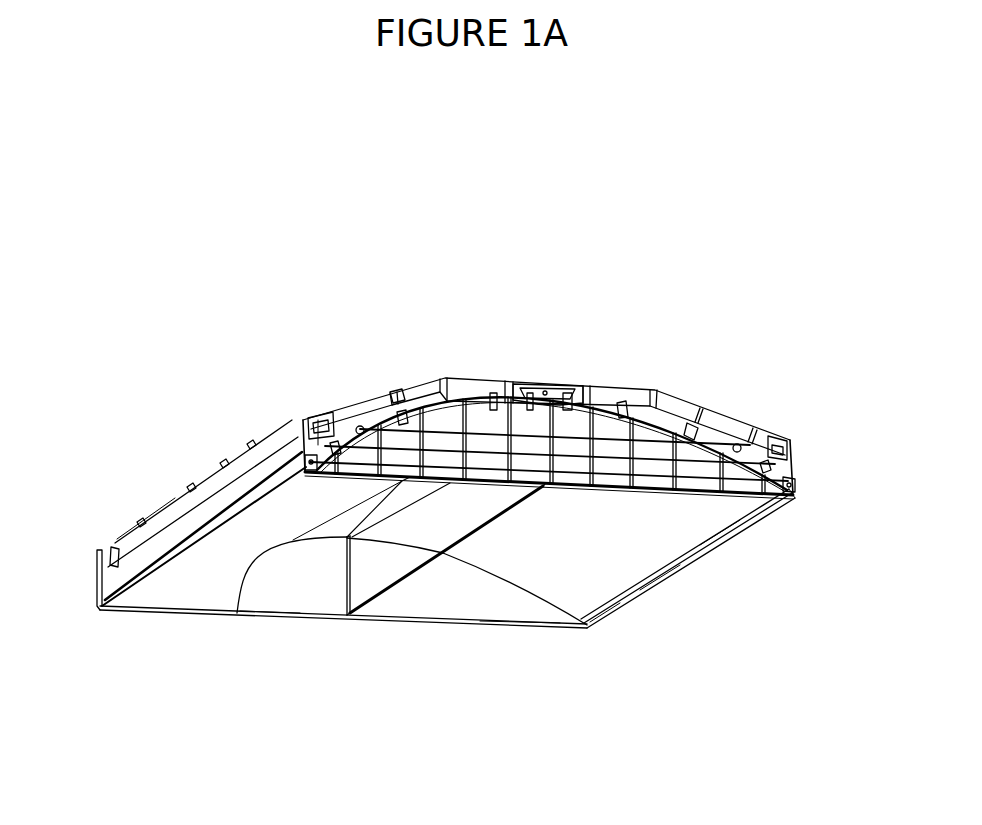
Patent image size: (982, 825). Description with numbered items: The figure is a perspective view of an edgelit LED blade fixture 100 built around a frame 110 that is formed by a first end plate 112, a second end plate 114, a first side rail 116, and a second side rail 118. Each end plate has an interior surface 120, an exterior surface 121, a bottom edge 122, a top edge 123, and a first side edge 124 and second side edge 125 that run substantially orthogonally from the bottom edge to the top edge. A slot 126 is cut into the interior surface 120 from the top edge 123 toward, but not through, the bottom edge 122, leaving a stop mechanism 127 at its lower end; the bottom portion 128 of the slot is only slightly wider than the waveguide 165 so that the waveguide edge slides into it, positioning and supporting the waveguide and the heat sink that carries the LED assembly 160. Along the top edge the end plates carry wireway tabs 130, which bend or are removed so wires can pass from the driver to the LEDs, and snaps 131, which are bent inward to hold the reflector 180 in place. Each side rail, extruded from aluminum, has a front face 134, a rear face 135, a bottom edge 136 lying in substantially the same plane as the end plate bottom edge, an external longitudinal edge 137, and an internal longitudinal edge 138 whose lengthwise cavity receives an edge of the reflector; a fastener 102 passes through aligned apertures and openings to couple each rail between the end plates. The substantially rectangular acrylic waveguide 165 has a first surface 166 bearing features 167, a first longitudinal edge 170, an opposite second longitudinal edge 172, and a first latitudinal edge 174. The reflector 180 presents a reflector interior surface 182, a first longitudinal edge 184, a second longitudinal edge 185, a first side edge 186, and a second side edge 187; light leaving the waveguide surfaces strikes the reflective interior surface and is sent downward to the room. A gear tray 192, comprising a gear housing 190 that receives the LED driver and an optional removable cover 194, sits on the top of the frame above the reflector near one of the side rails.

The edgelit LED blade fixture 100 is at (636, 293).
The fastener 102 is at (798, 484).
The frame 110 is at (346, 388).
The first end plate 112 is at (515, 615).
The second end plate 114 is at (488, 417).
The first side rail 116 is at (126, 590).
The second side rail 118 is at (793, 505).
The interior surface 120 is at (233, 594).
The exterior surface 121 is at (640, 433).
The bottom edge 122 is at (276, 615).
The top edge 123 is at (112, 547).
The first side edge 124 is at (798, 455).
The second side edge 125 is at (290, 428).
The slot 126 is at (345, 576).
The stop mechanism 127 is at (346, 615).
The bottom portion of the slot 128 is at (300, 614).
The wireway tab 130 is at (420, 385).
The snap 131 is at (466, 393).
The front face 134 is at (263, 466).
The rear face 135 is at (794, 496).
The bottom edge 136 is at (189, 560).
The external longitudinal edge 137 is at (229, 510).
The internal longitudinal edge 138 is at (613, 611).
The LED assembly 160 is at (366, 574).
The waveguide 165 is at (418, 545).
The first surface 166 is at (383, 553).
The features 167 is at (478, 512).
The first longitudinal edge 170 is at (393, 503).
The second longitudinal edge 172 is at (385, 596).
The first latitudinal edge 174 is at (345, 557).
The reflector 180 is at (662, 557).
The reflector interior surface 182 is at (690, 537).
The first longitudinal edge 184 is at (647, 597).
The second longitudinal edge 185 is at (357, 525).
The first side edge 186 is at (240, 604).
The second side edge 187 is at (485, 574).
The gear housing 190 is at (218, 486).
The gear tray 192 is at (238, 438).
The removable cover 194 is at (331, 410).